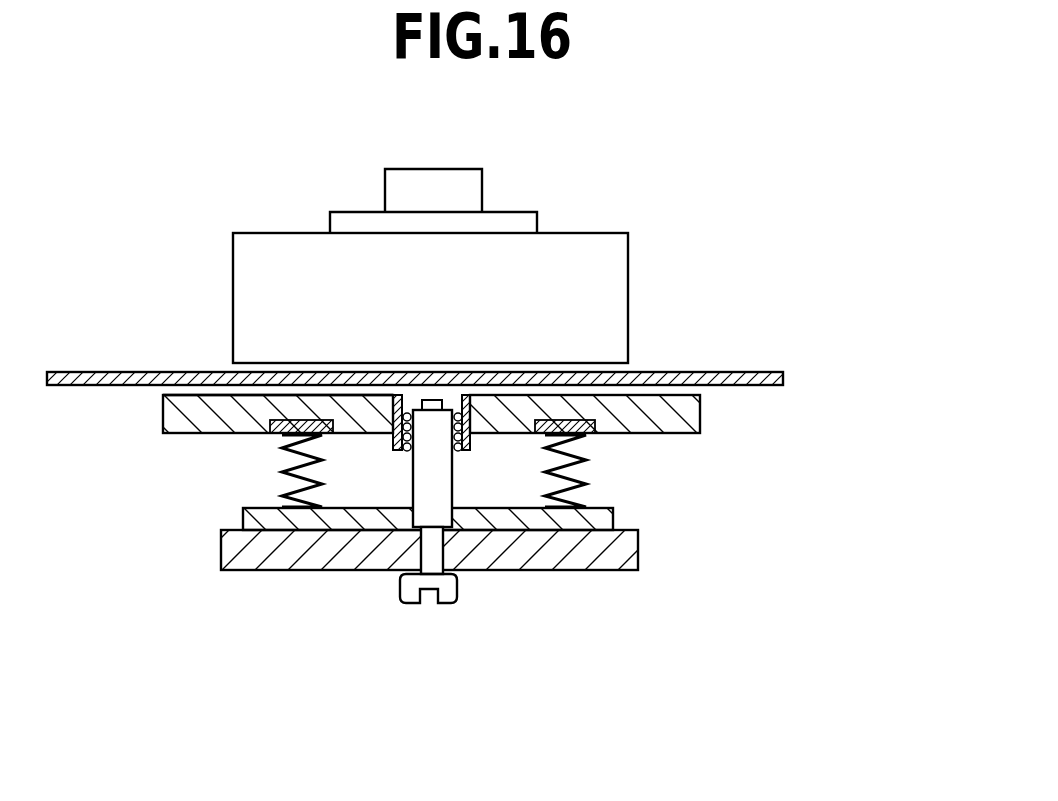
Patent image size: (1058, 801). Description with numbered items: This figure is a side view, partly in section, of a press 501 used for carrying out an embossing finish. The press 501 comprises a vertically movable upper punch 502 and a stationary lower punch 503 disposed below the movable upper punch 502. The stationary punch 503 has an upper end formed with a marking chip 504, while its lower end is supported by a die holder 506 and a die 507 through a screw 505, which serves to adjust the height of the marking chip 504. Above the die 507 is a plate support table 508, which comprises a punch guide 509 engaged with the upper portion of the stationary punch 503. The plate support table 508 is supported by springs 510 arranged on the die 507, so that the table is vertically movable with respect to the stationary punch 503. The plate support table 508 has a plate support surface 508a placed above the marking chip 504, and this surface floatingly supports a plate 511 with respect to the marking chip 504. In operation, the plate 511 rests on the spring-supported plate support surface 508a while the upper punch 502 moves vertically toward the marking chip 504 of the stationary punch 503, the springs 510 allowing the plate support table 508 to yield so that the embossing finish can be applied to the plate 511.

The press 501 is at (857, 302).
The upper punch 502 is at (652, 287).
The stationary punch 503 is at (478, 481).
The marking chip 504 is at (437, 399).
The screw 505 is at (433, 552).
The die holder 506 is at (383, 556).
The die 507 is at (393, 448).
The plate support table 508 is at (207, 445).
The plate support surface 508a is at (168, 392).
The punch guide 509 is at (350, 522).
The springs 510 is at (273, 502).
The plate 511 is at (130, 372).